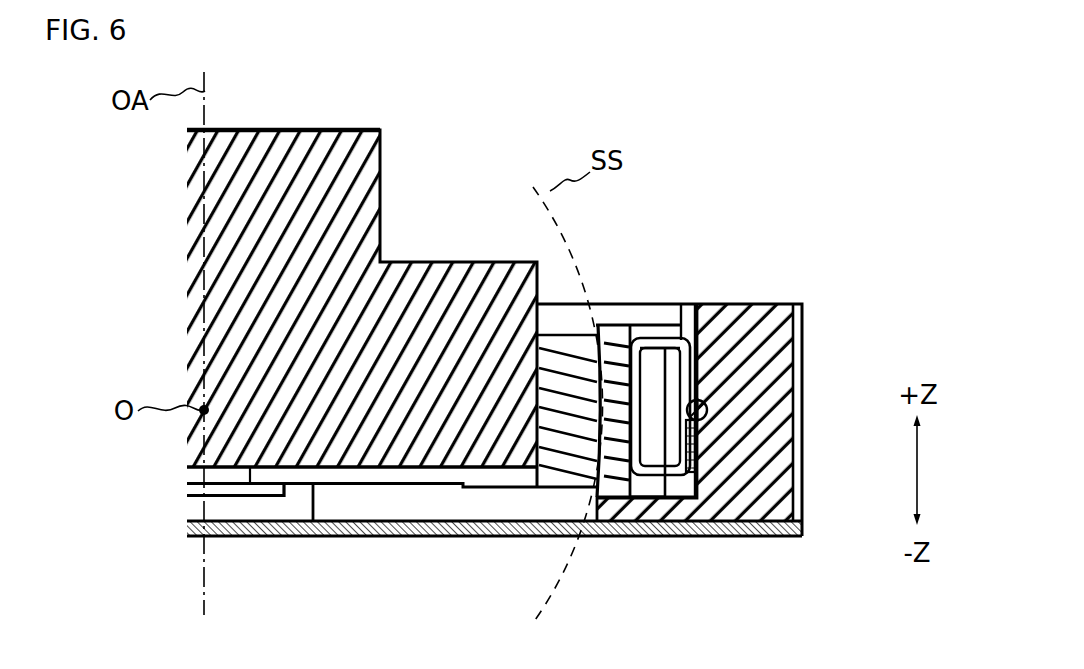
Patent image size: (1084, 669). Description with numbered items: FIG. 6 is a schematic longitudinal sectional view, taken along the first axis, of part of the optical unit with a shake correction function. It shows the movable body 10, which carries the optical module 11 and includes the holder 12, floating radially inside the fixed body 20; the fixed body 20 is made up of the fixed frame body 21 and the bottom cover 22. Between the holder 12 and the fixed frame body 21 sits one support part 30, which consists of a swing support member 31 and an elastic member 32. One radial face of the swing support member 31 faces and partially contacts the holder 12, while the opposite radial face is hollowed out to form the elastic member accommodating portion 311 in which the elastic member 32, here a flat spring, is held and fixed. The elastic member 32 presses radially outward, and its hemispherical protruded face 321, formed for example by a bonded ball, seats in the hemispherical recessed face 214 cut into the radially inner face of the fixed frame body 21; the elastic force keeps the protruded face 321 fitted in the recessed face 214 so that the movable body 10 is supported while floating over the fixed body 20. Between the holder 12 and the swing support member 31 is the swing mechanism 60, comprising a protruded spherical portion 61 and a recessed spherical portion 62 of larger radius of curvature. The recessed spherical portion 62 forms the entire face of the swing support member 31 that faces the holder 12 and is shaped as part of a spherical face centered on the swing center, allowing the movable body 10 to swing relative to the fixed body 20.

The movable body 10 is at (410, 147).
The optical module 11 is at (308, 131).
The holder 12 is at (556, 334).
The fixed body 20 is at (530, 397).
The fixed frame body 21 is at (781, 460).
The bottom cover 22 is at (700, 534).
The recessed face 214 is at (708, 404).
The support part 30 is at (692, 334).
The swing support member 31 is at (608, 324).
The elastic member accommodating portion 311 is at (638, 338).
The elastic member 32 is at (680, 324).
The protruded face 321 is at (737, 349).
The swing mechanism 60 is at (572, 488).
The protruded spherical portion 61 is at (615, 350).
The recessed spherical portion 62 is at (627, 499).